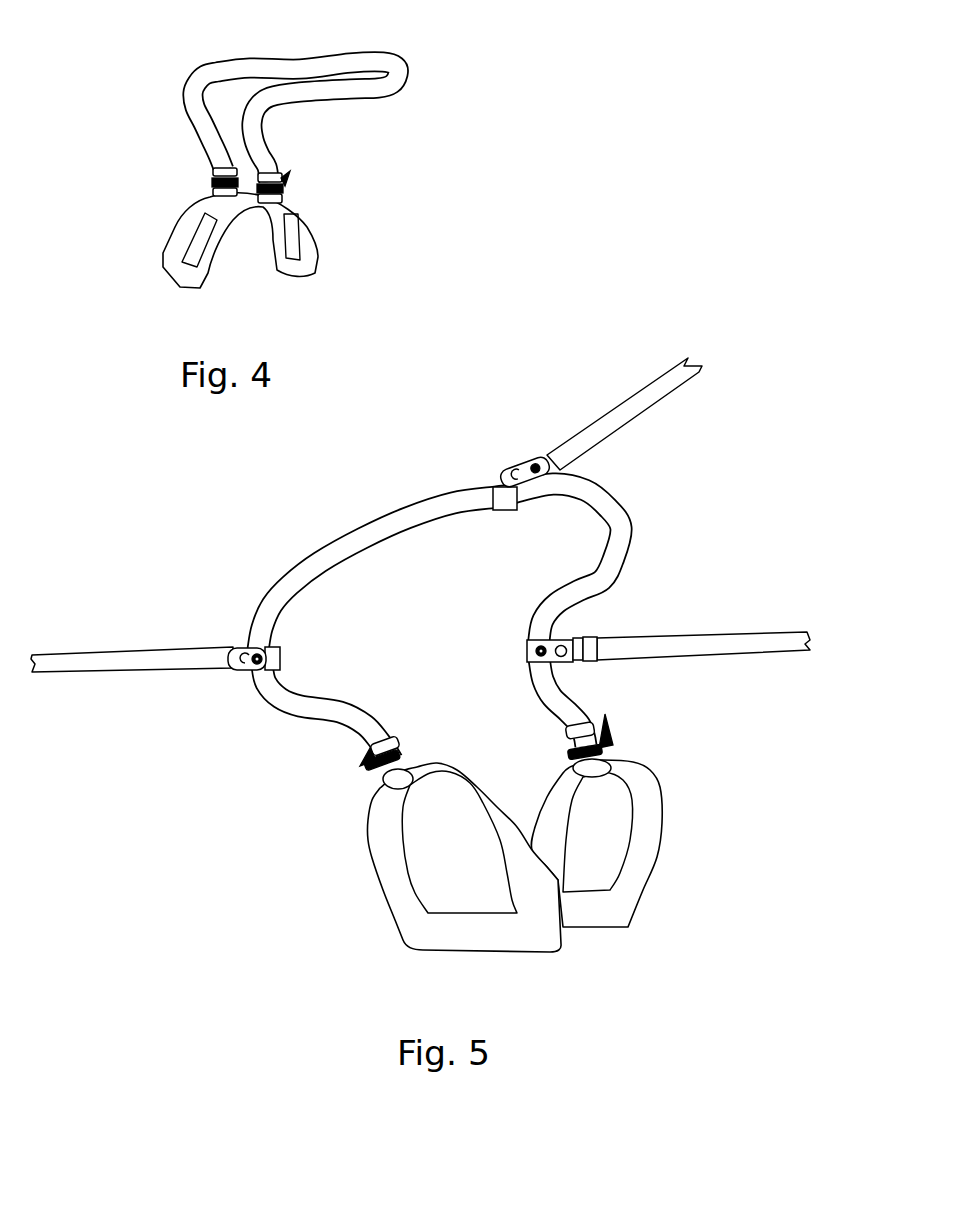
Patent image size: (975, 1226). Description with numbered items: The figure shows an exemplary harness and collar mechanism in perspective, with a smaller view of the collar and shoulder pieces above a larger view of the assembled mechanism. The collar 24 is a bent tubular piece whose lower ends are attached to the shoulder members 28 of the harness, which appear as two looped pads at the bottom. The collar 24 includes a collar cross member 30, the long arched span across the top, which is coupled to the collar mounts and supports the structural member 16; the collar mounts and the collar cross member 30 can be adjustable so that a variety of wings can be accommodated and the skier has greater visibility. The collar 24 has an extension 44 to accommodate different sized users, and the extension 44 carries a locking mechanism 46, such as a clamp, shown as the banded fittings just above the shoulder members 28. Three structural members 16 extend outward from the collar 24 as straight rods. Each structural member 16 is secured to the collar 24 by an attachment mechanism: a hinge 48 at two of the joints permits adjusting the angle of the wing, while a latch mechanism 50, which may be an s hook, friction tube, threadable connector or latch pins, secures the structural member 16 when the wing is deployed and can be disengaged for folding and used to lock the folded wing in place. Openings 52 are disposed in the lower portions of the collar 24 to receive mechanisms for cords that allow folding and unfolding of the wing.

In FIG. 5, the structural member 16 is at (647, 390).
In FIG. 4, the collar 24 is at (392, 66).
In FIG. 5, the collar 24 is at (620, 520).
In FIG. 4, the shoulder member 28 is at (183, 227).
In FIG. 5, the shoulder member 28 is at (632, 870).
In FIG. 5, the collar cross member 30 is at (450, 507).
In FIG. 5, the extension 44 is at (610, 752).
In FIG. 4, the locking mechanism 46 is at (290, 180).
In FIG. 5, the locking mechanism 46 is at (602, 730).
In FIG. 5, the hinge 48 is at (537, 463).
In FIG. 5, the latch mechanism 50 is at (530, 640).
In FIG. 5, the opening 52 is at (280, 715).